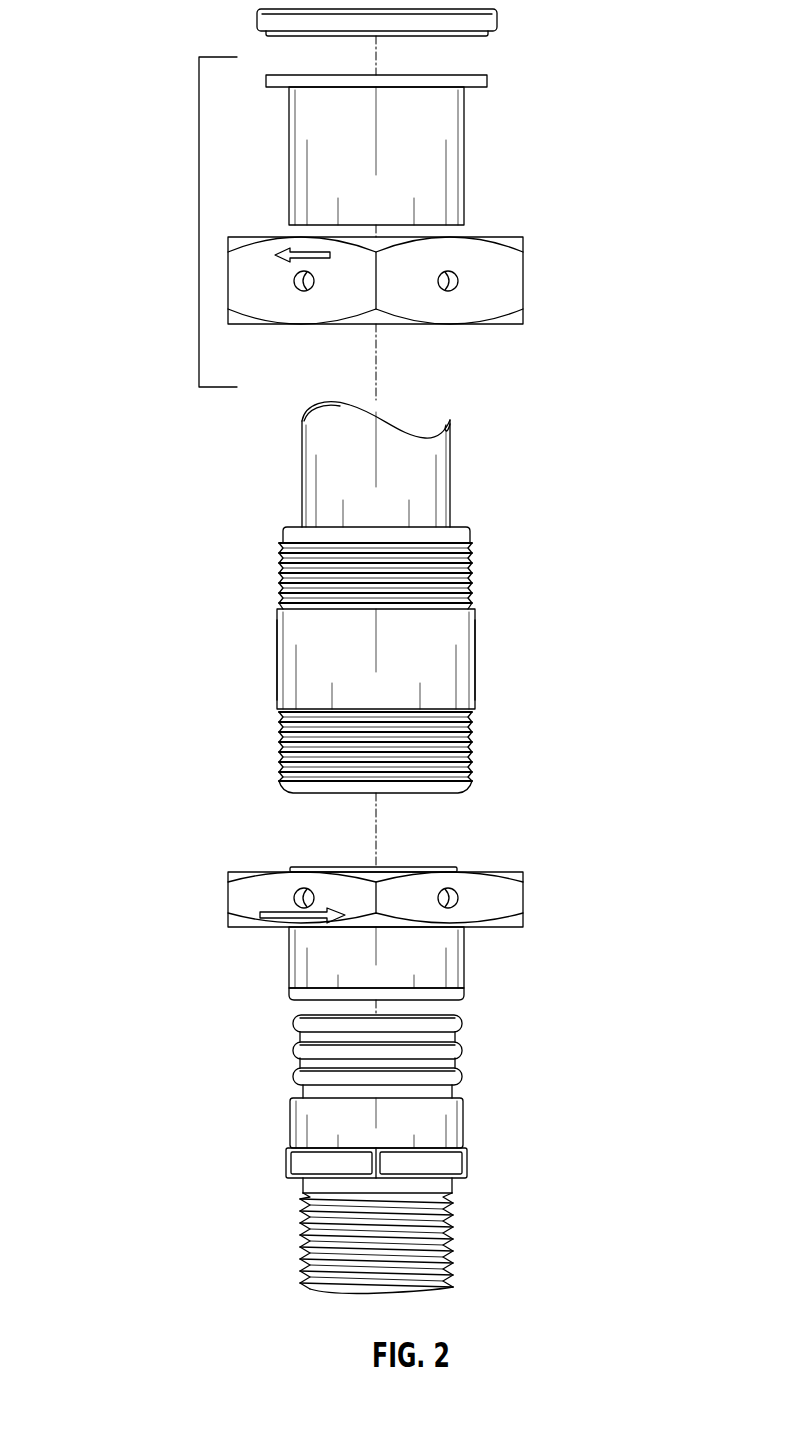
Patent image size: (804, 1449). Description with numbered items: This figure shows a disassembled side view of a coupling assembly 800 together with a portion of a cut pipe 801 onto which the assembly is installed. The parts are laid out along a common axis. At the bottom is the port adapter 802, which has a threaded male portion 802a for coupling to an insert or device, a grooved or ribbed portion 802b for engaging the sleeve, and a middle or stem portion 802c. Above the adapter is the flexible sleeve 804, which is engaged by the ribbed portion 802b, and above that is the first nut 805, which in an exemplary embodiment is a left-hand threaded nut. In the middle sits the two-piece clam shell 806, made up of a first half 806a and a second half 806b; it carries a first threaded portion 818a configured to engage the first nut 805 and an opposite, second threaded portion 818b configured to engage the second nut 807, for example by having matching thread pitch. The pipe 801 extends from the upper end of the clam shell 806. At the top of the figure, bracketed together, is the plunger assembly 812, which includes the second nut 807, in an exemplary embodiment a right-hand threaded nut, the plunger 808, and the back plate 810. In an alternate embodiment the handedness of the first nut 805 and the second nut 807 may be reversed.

The coupling assembly 800 is at (96, 592).
The cut pipe 801 is at (301, 472).
The port adapter 802 is at (373, 1154).
The threaded male portion 802a is at (305, 1252).
The grooved or ribbed portion 802b is at (300, 1068).
The stem portion 802c is at (292, 1145).
The flexible sleeve 804 is at (464, 972).
The first nut 805 is at (457, 870).
The two-piece clam shell 806 is at (386, 660).
The first half of clam shell 806a is at (475, 672).
The second half of clam shell 806b is at (277, 672).
The second nut 807 is at (523, 318).
The plunger 808 is at (464, 139).
The back plate 810 is at (497, 23).
The plunger assembly 812 is at (197, 222).
The first threaded portion 818a is at (280, 730).
The second threaded portion 818b is at (280, 558).